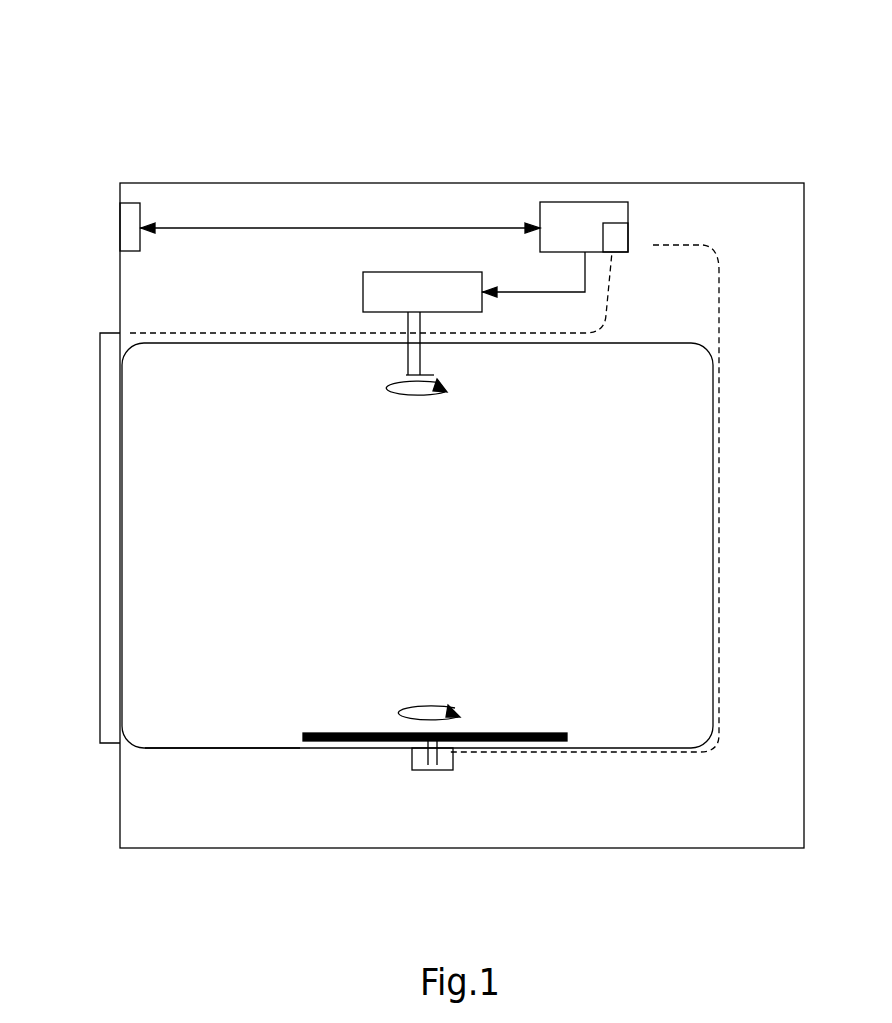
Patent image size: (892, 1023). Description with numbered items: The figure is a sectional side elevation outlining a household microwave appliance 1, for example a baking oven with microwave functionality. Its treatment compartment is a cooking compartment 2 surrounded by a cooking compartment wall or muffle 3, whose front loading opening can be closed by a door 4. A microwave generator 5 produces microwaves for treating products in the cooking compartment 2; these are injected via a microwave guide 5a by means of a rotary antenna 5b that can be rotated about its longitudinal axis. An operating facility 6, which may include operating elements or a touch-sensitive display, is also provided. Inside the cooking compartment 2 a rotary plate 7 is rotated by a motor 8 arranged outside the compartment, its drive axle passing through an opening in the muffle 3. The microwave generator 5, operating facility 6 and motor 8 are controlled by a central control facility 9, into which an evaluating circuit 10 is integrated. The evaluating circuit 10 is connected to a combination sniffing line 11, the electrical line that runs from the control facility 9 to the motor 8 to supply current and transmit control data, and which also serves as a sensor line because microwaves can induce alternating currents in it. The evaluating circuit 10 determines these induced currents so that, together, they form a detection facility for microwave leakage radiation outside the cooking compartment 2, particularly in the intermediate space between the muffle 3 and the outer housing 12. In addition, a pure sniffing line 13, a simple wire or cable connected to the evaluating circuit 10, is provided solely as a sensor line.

The household microwave appliance 1 is at (143, 115).
The cooking compartment 2 is at (175, 745).
The cooking compartment wall 3 is at (222, 748).
The door 4 is at (100, 540).
The microwave generator 5 is at (362, 292).
The microwave guide 5a is at (405, 336).
The rotary antenna 5b is at (405, 362).
The operating facility 6 is at (138, 252).
The rotary plate 7 is at (358, 732).
The motor 8 is at (450, 771).
The central control facility 9 is at (588, 202).
The evaluating circuit 10 is at (628, 240).
The combination sniffing line 11 is at (720, 425).
The outer housing 12 is at (320, 183).
The pure sniffing line 13 is at (274, 333).